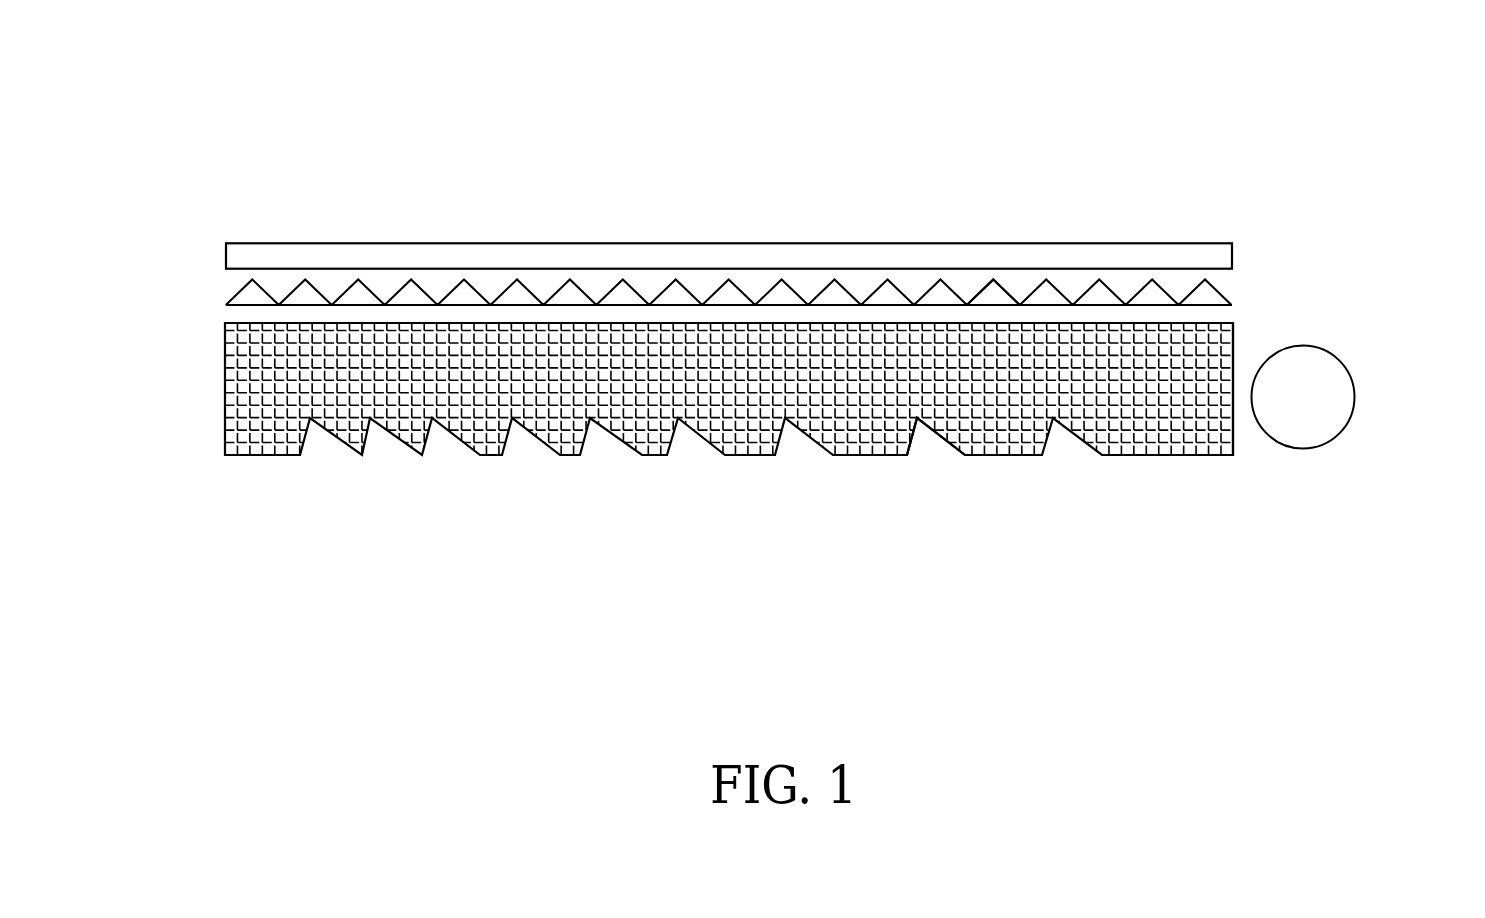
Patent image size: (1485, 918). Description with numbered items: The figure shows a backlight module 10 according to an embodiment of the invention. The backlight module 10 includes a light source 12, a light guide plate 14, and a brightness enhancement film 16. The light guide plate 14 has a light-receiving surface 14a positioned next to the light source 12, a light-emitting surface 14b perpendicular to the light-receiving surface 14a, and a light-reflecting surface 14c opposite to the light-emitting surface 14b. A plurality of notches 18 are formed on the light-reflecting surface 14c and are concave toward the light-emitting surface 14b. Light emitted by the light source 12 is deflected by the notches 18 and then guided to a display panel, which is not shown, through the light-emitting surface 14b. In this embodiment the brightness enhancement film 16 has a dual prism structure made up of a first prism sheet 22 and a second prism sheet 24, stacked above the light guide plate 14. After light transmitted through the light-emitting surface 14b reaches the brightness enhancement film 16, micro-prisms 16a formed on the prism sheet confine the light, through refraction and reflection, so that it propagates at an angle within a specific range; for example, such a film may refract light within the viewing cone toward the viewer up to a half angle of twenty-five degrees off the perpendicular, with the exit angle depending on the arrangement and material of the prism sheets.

The backlight module 10 is at (1341, 54).
The light source 12 is at (1352, 417).
The light guide plate 14 is at (222, 377).
The light-receiving surface 14a is at (1233, 415).
The light-emitting surface 14b is at (602, 323).
The light-reflecting surface 14c is at (1007, 455).
The brightness enhancement film 16 is at (819, 234).
The micro-prisms 16a is at (972, 293).
The notches 18 is at (925, 445).
The first prism sheet 22 is at (1232, 302).
The second prism sheet 24 is at (1232, 255).